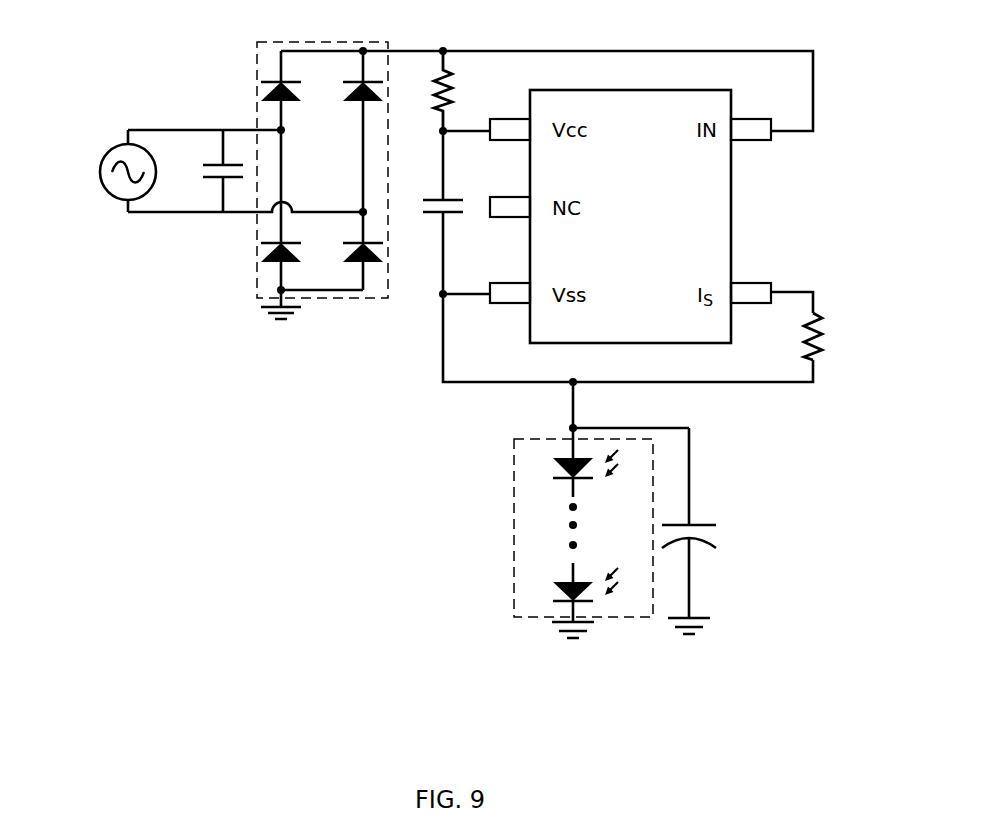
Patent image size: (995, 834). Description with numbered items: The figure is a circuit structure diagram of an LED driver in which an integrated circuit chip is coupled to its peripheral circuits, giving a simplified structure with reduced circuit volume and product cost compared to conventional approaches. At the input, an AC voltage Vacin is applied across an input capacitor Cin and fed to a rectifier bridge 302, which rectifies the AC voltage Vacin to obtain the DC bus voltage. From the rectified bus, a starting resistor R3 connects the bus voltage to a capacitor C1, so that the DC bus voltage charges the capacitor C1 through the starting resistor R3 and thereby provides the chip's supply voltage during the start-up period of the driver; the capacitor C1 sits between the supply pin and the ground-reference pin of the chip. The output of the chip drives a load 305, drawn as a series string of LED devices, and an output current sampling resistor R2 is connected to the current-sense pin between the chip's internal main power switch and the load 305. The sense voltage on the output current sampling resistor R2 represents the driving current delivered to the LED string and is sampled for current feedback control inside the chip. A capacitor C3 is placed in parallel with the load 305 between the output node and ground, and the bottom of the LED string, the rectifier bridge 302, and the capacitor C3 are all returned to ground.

The rectifier bridge 302 is at (347, 299).
The load 305 is at (552, 523).
The AC voltage Vacin is at (96, 172).
The input capacitor Cin is at (205, 171).
The starting resistor R3 is at (459, 91).
The capacitor C1 is at (429, 176).
The output current sampling resistor R2 is at (795, 336).
The capacitor C3 is at (708, 531).
The element LED is at (590, 544).